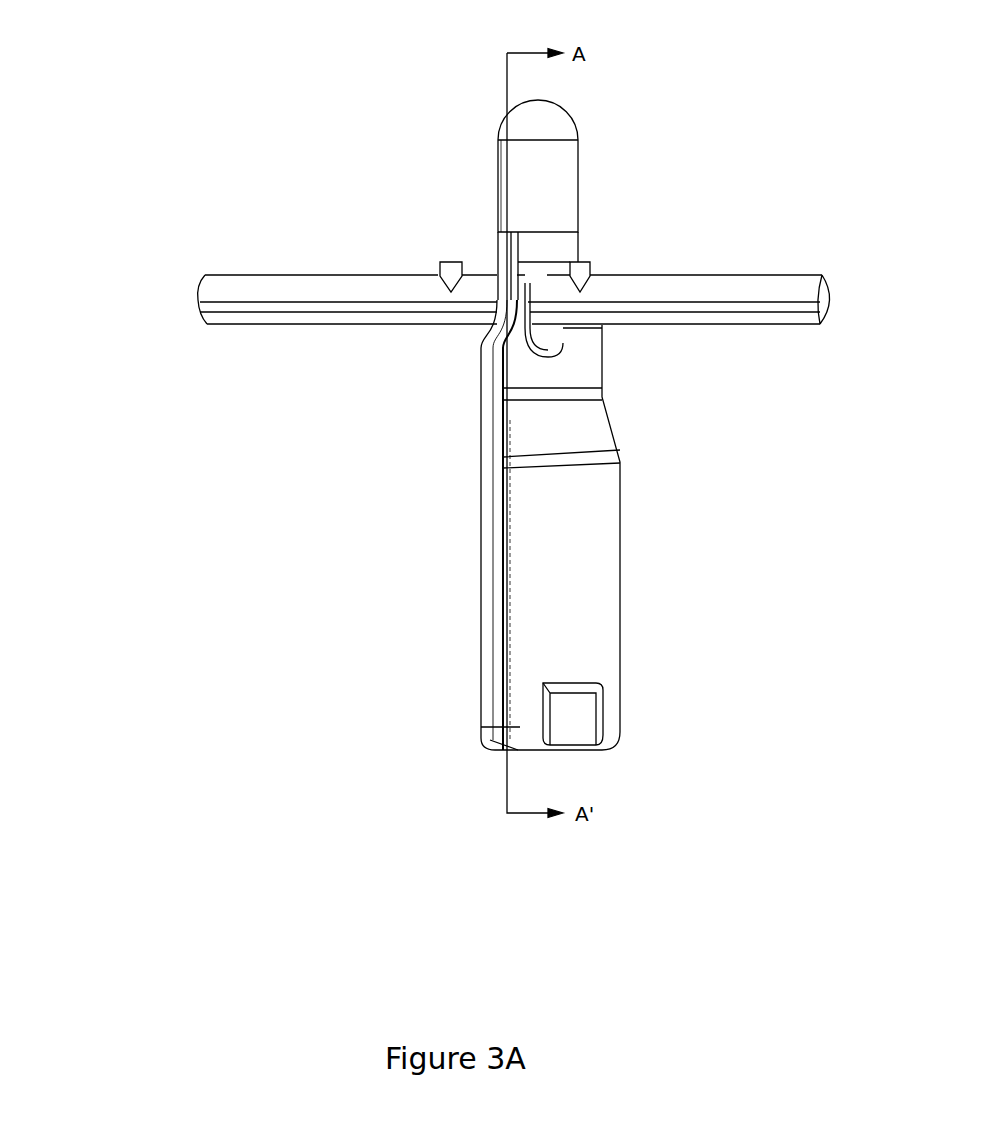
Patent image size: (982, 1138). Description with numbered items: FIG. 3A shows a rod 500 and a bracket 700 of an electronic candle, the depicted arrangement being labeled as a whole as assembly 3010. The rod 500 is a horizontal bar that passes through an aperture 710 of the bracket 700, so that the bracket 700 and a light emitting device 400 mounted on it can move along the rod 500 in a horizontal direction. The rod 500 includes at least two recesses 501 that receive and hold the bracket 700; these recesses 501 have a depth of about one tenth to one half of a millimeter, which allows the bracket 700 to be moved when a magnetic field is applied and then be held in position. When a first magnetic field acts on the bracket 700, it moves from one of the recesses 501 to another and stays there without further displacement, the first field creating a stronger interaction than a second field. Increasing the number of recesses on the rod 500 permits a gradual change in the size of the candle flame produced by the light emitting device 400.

The electrical contact assembly 3010 is at (240, 80).
The light emitting device 400 is at (588, 162).
The rod 500 is at (300, 275).
The recesses 501 is at (533, 283).
The bracket 700 is at (590, 248).
The aperture 710 is at (563, 340).